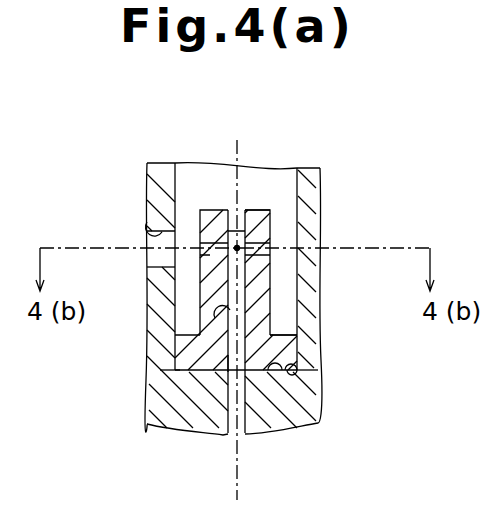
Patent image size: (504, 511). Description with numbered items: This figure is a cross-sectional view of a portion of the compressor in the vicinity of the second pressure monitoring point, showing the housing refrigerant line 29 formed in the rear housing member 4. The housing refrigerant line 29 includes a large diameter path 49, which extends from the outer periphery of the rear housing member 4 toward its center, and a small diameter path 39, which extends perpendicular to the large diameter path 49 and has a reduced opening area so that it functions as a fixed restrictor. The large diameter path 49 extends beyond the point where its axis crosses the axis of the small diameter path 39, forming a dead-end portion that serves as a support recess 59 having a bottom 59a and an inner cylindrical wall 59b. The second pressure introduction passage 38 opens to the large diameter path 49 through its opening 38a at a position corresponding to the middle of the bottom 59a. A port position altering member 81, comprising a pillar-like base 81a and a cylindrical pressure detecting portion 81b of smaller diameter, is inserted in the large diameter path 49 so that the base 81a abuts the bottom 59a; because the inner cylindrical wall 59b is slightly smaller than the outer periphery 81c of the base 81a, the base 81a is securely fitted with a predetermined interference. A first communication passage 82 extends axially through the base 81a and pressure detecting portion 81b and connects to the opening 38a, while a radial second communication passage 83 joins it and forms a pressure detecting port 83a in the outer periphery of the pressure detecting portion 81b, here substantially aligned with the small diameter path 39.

The rear housing member 4 is at (320, 172).
The housing refrigerant line 29 is at (142, 167).
The small diameter path 39 is at (147, 233).
The large diameter path 49 is at (180, 165).
The second pressure introduction passage 38 is at (240, 420).
The opening of the second pressure introduction passage 38a is at (228, 364).
The support recess 59 is at (302, 295).
The bottom of the support recess 59a is at (277, 398).
The inner cylindrical wall 59b is at (300, 371).
The port position altering member 81 is at (275, 306).
The base 81a is at (288, 353).
The pressure detecting portion 81b is at (261, 207).
The outer periphery of the base 81c is at (168, 378).
The first communication passage 82 is at (175, 351).
The second communication passage 83 is at (200, 256).
The pressure detecting port 83a is at (200, 234).